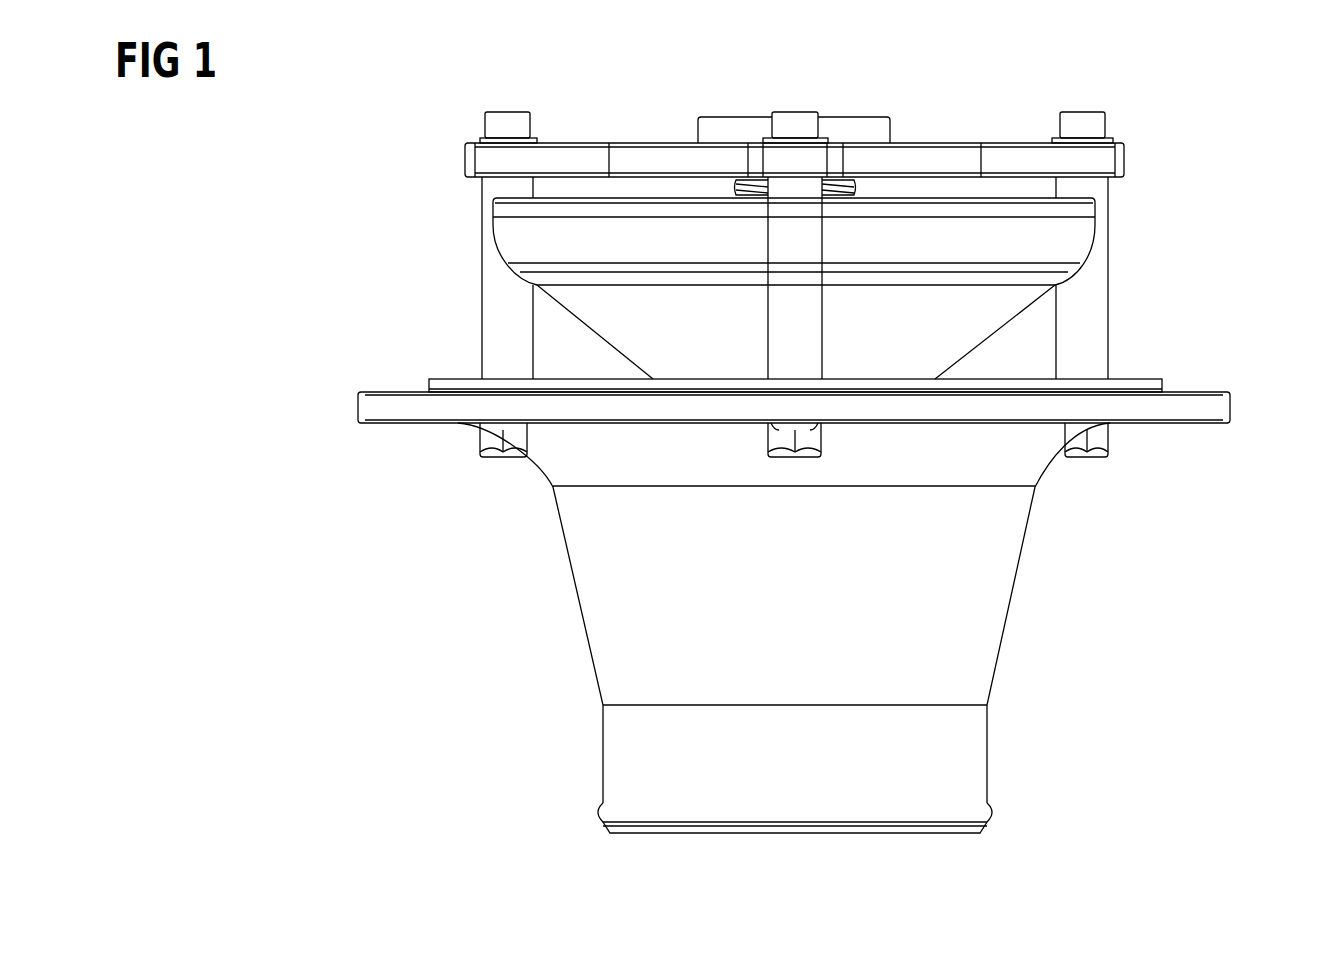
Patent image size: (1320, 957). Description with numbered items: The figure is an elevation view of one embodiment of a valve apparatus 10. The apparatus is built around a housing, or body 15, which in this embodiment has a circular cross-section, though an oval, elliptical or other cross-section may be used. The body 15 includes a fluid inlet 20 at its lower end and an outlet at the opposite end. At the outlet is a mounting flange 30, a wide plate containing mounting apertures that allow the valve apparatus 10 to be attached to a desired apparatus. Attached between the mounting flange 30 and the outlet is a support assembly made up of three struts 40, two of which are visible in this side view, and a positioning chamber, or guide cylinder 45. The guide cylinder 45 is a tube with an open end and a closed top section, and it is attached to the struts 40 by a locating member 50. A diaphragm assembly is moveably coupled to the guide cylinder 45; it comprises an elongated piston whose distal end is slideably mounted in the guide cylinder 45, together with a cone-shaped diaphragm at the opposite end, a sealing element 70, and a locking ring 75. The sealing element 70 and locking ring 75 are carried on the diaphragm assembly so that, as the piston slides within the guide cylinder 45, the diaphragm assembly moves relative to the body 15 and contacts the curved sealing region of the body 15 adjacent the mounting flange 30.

The valve apparatus 10 is at (302, 299).
The body 15 is at (832, 636).
The fluid inlet 20 is at (650, 848).
The mounting flange 30 is at (409, 407).
The struts 40 is at (495, 298).
The guide cylinder 45 is at (718, 128).
The locating member 50 is at (540, 158).
The sealing element 70 is at (985, 278).
The locking ring 75 is at (1038, 237).